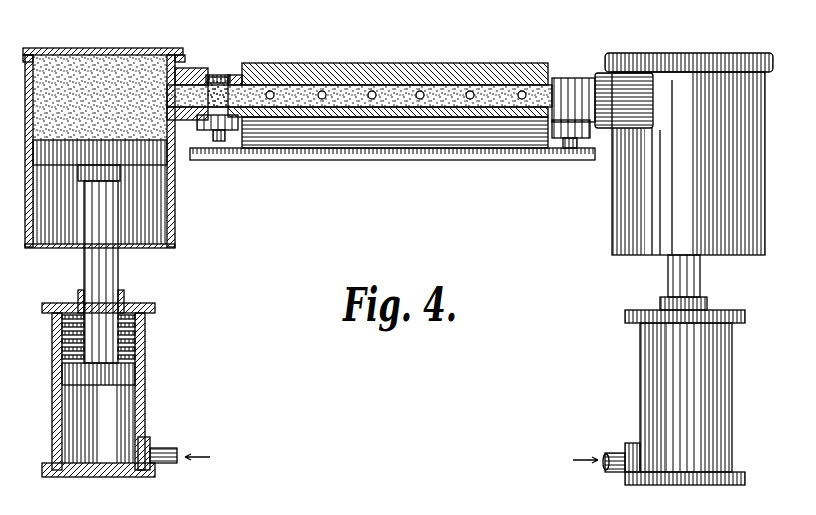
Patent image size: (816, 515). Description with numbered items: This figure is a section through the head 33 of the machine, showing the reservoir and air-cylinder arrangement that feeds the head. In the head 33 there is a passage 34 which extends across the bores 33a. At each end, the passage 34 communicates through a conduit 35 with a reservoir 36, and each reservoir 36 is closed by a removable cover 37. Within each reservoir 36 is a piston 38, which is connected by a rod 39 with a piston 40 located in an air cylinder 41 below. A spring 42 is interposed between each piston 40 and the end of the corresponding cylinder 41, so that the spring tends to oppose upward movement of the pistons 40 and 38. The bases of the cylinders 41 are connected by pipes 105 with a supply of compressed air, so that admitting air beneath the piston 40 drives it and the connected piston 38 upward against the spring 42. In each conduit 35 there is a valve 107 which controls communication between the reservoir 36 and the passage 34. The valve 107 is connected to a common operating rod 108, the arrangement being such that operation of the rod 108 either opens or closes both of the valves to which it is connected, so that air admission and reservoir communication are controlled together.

The head 33 is at (398, 120).
The bores 33a is at (331, 68).
The passage 34 is at (403, 88).
The conduits 35 is at (223, 76).
The reservoirs 36 is at (173, 205).
The removable covers 37 is at (115, 48).
The piston 38 is at (160, 157).
The rod 39 is at (112, 263).
The piston 40 is at (128, 374).
The air cylinder 41 is at (118, 410).
The spring 42 is at (128, 338).
The pipes 105 is at (170, 470).
The valve 107 is at (210, 75).
The common operating rod 108 is at (226, 142).